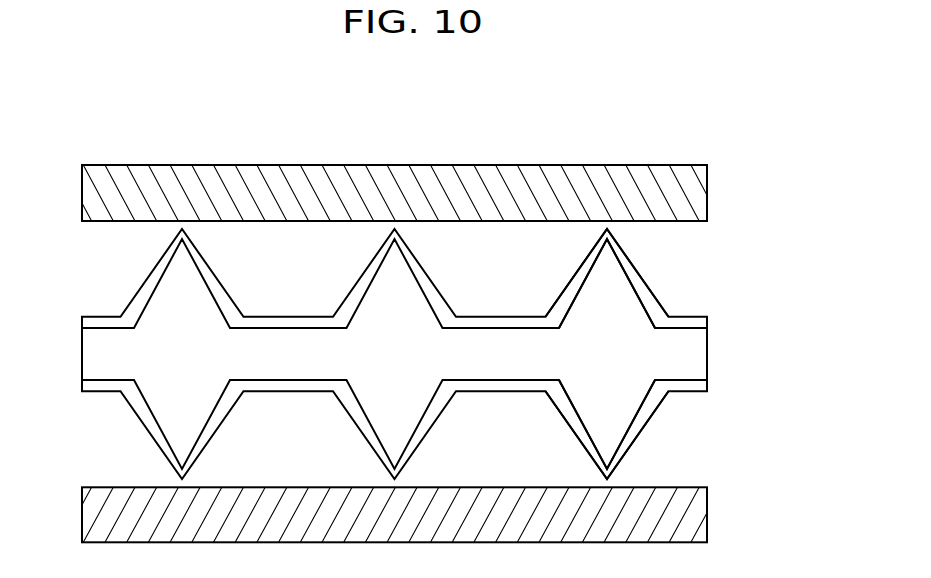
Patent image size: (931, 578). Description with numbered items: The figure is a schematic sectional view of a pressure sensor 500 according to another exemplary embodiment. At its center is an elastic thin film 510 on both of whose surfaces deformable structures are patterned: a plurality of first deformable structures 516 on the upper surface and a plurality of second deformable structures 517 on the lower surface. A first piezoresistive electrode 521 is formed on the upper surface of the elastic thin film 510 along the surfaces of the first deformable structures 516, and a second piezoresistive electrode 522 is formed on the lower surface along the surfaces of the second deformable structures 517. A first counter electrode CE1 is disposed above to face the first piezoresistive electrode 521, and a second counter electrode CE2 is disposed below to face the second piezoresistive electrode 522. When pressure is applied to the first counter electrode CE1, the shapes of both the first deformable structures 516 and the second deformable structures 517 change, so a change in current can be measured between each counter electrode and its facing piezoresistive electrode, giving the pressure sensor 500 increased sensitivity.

The pressure sensor 500 is at (712, 128).
The first counter electrode CE1 is at (707, 193).
The second counter electrode CE2 is at (707, 513).
The elastic thin film 510 is at (700, 357).
The first piezoresistive electrode 521 is at (707, 323).
The second piezoresistive electrode 522 is at (707, 388).
The first deformable structures 516 is at (608, 278).
The second deformable structures 517 is at (608, 428).